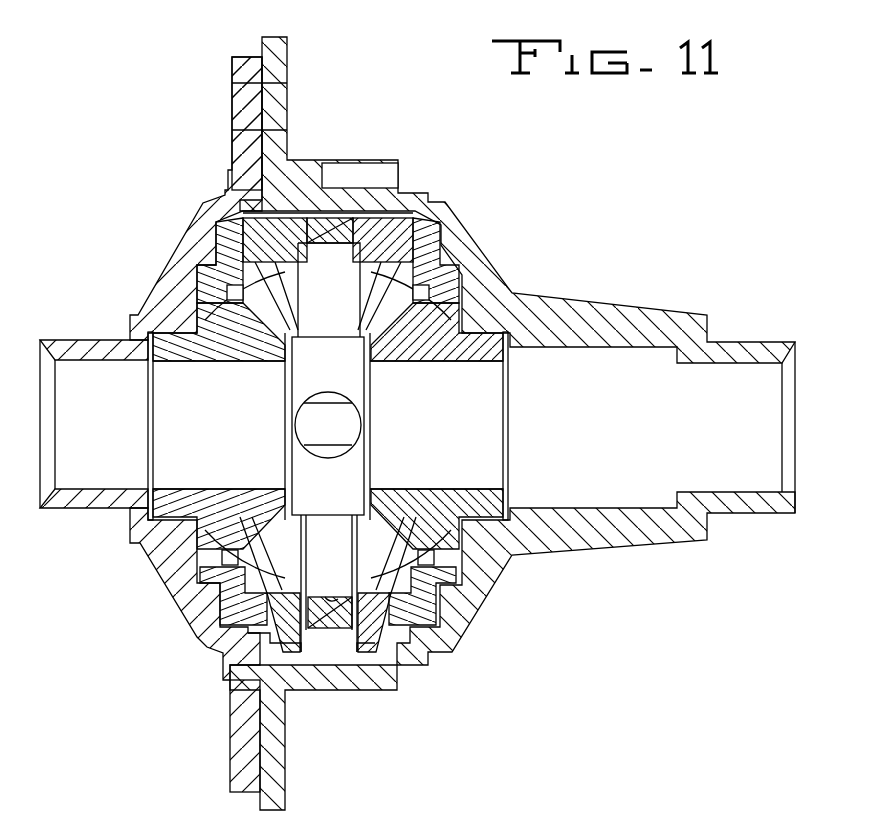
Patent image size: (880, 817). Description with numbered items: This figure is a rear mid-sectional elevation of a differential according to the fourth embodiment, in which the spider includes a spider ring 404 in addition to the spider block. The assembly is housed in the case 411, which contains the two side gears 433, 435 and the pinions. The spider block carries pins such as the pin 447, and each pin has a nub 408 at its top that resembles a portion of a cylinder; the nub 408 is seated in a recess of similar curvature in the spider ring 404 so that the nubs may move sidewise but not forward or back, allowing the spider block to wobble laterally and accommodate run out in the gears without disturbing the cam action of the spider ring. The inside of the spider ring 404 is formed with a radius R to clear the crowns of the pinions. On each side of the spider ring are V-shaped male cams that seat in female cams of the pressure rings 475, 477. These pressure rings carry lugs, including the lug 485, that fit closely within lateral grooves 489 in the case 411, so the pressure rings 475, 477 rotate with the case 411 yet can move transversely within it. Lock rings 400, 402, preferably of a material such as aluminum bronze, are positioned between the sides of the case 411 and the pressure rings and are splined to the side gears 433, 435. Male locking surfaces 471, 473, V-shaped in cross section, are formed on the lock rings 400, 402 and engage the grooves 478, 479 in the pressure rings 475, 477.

The lock ring 400 is at (227, 231).
The lock ring 402 is at (435, 247).
The spider ring 404 is at (317, 623).
The nub 408 is at (350, 427).
The case 411 is at (477, 213).
The side gear 433 is at (202, 322).
The side gear 435 is at (455, 327).
The pin 447 is at (235, 398).
The male locking surface 471 is at (256, 600).
The male locking surface 473 is at (406, 598).
The pressure ring 475 is at (253, 217).
The pressure ring 477 is at (410, 197).
The groove 478 is at (228, 238).
The groove 479 is at (430, 217).
The lug 485 is at (275, 652).
The lateral groove 489 is at (303, 660).
The radius R is at (333, 597).